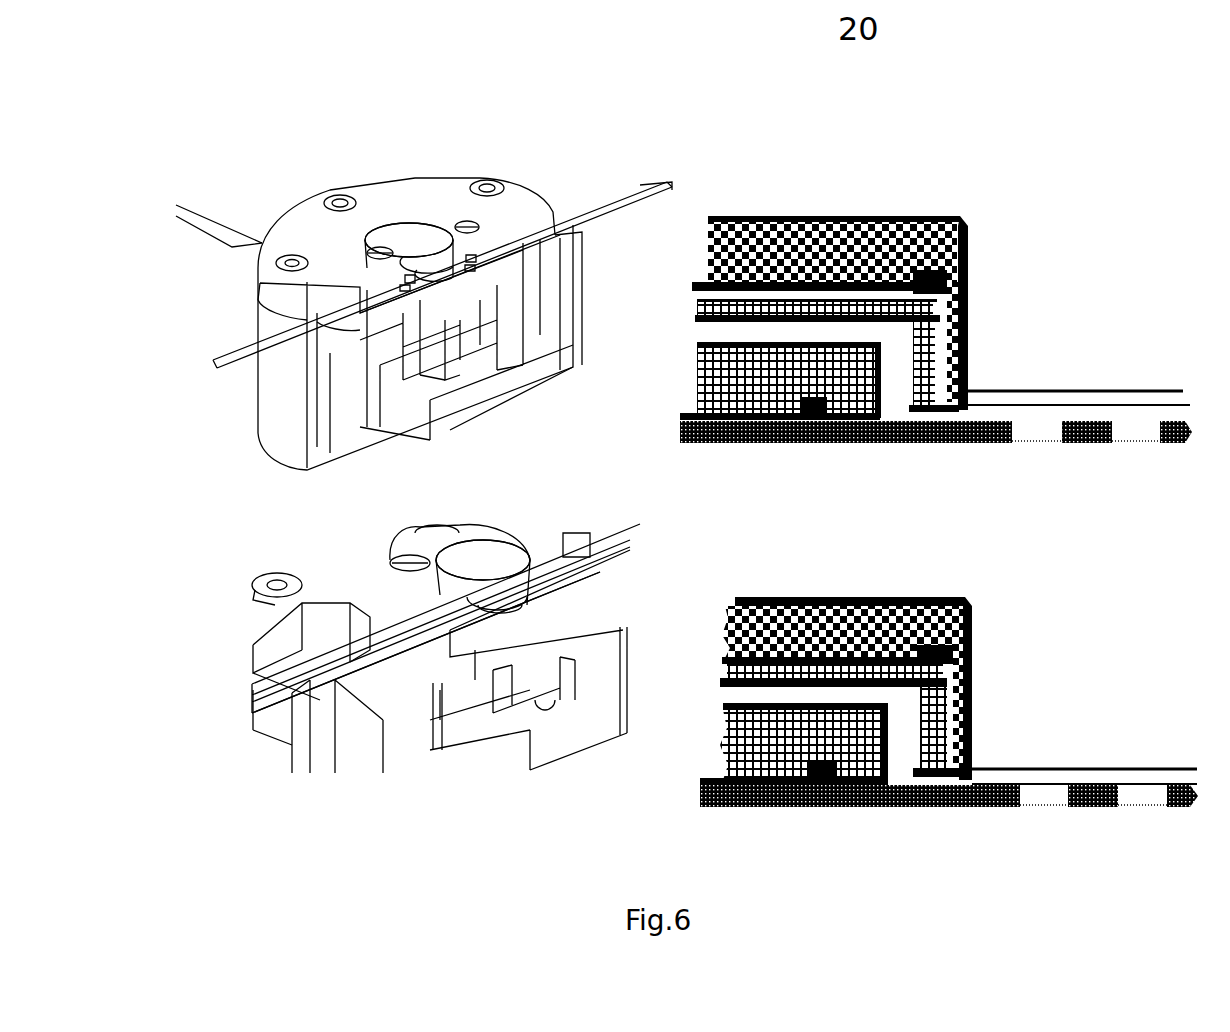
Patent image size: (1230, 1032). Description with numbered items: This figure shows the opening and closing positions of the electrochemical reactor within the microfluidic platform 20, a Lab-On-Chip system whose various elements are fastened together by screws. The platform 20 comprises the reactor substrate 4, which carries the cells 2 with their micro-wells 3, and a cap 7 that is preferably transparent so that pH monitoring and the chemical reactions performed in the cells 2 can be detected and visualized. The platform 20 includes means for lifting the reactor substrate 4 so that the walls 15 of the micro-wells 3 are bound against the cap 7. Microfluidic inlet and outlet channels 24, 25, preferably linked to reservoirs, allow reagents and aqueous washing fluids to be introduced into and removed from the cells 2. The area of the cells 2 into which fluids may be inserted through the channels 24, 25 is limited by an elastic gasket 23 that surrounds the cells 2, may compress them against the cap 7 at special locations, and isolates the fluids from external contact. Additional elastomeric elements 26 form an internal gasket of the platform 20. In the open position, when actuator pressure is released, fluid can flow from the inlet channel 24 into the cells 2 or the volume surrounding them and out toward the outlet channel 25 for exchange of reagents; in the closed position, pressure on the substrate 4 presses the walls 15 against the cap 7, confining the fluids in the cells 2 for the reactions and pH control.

The microfluidic platform 20 is at (858, 29).
The elastomeric elements 26 is at (410, 277).
The microfluidic inlet channel 24 is at (227, 355).
The microfluidic outlet channel 25 is at (663, 183).
The cap 7 is at (497, 603).
The reactor substrate 4 is at (405, 653).
The elastic gasket 23 is at (550, 597).
The micro-wells 3 is at (1055, 432).
The micro-well walls 15 is at (1012, 440).
The cells 2 is at (1003, 807).